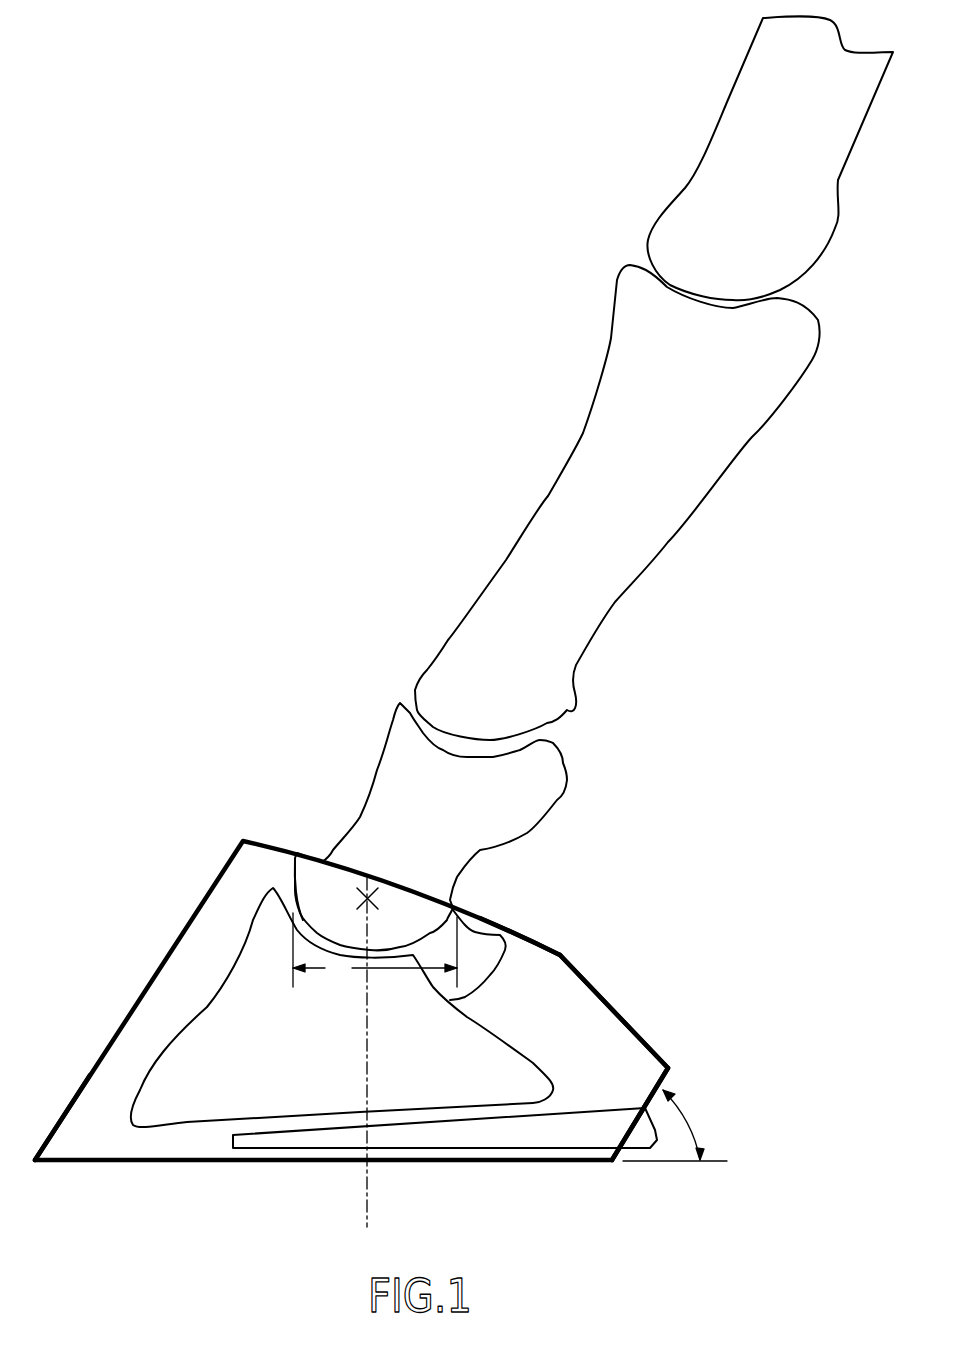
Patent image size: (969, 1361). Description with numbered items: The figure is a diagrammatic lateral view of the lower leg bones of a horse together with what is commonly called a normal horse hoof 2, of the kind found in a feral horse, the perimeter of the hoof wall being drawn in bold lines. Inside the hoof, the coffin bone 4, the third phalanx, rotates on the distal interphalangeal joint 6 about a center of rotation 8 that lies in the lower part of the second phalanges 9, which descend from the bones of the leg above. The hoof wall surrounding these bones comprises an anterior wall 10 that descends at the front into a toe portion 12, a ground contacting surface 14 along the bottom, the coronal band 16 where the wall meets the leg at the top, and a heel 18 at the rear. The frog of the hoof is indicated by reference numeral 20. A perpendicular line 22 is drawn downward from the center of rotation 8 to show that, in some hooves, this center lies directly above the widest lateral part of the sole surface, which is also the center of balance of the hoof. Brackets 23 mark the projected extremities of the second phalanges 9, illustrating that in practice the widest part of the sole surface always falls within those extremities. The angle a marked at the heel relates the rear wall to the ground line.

The horse hoof 2 is at (640, 925).
The coffin bone 4 is at (247, 992).
The distal interphalangeal joint 6 is at (319, 938).
The center of rotation 8 is at (367, 898).
The second phalanges 9 is at (393, 743).
The anterior wall 10 is at (148, 982).
The toe portion 12 is at (58, 1120).
The ground contacting surface 14 is at (200, 1165).
The coronal band 16 is at (483, 913).
The heel 18 is at (612, 1163).
The frog 20 is at (548, 1135).
The perpendicular line 22 is at (367, 1190).
The brackets 23 is at (375, 950).
The hoof angle a is at (683, 1125).